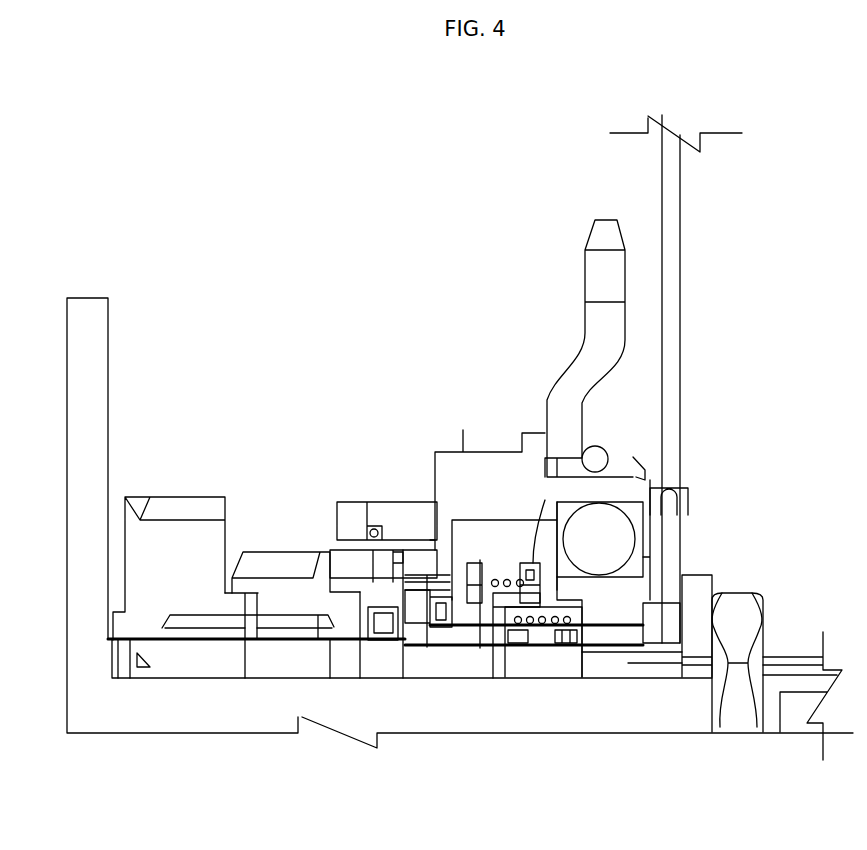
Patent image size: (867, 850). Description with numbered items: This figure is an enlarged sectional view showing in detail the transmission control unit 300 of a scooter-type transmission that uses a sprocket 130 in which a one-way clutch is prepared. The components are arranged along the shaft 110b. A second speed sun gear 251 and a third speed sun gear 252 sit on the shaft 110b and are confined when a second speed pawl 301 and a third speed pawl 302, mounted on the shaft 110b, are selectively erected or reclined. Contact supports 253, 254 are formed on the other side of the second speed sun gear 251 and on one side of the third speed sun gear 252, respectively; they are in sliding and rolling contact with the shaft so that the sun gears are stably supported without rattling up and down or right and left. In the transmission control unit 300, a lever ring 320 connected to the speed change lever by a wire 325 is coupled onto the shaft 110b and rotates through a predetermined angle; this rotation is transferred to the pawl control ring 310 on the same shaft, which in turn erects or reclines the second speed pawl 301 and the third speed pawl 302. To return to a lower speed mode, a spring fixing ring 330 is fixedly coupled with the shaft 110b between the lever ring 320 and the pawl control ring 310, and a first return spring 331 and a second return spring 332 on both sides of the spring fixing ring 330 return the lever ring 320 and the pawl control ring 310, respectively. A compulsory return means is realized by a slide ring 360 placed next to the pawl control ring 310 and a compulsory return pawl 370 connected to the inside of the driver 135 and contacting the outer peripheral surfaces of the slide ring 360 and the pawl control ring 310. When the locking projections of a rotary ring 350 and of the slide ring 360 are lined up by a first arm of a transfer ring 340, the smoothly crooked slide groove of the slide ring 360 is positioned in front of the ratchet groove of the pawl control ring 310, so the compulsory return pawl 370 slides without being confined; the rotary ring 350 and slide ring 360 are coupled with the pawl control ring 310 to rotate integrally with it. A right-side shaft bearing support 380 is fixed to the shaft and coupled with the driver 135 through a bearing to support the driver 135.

The shaft 110b is at (650, 720).
The sprocket 130 is at (587, 272).
The driver 135 is at (485, 465).
The second speed sun gear 251 is at (280, 583).
The third speed sun gear 252 is at (173, 533).
The contact support 253 is at (352, 625).
The contact support 254 is at (130, 677).
The transmission control unit 300 is at (581, 511).
The second speed pawl 301 is at (340, 667).
The third speed pawl 302 is at (188, 667).
The pawl control ring 310 is at (413, 640).
The lever ring 320 is at (673, 533).
The wire 325 is at (668, 260).
The spring fixing ring 330 is at (545, 500).
The first return spring 331 is at (530, 627).
The second return spring 332 is at (497, 583).
The transfer ring 340 is at (550, 637).
The rotary ring 350 is at (472, 562).
The slide ring 360 is at (447, 637).
The compulsory return pawl 370 is at (425, 558).
The right-side shaft bearing support 380 is at (618, 592).